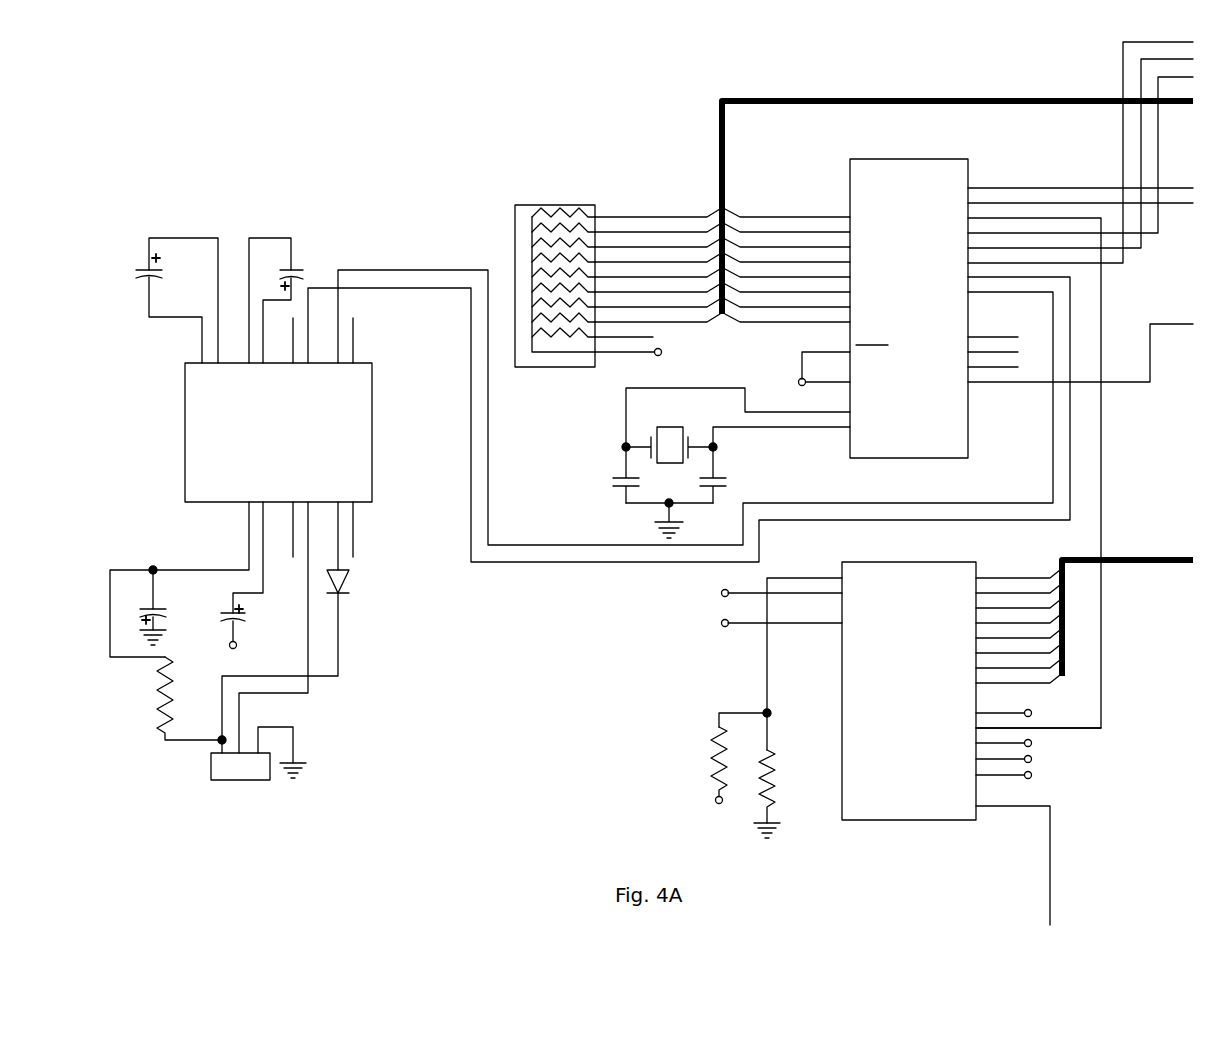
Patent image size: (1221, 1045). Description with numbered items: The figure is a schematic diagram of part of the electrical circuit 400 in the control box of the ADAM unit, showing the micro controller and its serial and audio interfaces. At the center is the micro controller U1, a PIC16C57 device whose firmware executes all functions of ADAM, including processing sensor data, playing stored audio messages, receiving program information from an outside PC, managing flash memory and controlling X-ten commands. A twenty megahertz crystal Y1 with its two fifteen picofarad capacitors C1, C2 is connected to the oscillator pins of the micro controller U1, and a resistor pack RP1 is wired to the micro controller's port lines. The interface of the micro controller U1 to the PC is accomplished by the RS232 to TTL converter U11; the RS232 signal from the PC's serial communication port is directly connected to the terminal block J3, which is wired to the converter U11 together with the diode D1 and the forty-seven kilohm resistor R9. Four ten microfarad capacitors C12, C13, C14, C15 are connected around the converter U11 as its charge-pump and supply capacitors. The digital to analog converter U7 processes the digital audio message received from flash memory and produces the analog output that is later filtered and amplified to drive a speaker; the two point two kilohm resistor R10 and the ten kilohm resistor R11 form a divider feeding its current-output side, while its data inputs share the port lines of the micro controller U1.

The electrical circuit 400 is at (385, 177).
The MAX232CPE RS232 to TTL converter U11 is at (312, 436).
The PIC16C57-HS/P micro controller U1 is at (974, 385).
The DAC0832LCN digital to analog converter U7 is at (939, 734).
The 10K resistor pack RP1 is at (602, 285).
The 20 MHZ crystal Y1 is at (736, 435).
The 15 PF capacitor C1 is at (606, 475).
The 15 PF capacitor C2 is at (728, 475).
The 10 UF capacitor C12 is at (177, 300).
The 10 UF capacitor C13 is at (289, 296).
The 10 UF capacitor C14 is at (172, 605).
The 10 UF capacitor C15 is at (251, 586).
The 47K resistor R9 is at (167, 698).
The 2.2K resistor R10 is at (721, 769).
The 10K resistor R11 is at (783, 775).
The 1N1914 diode D1 is at (317, 627).
The RS232 terminal block J3 is at (258, 775).